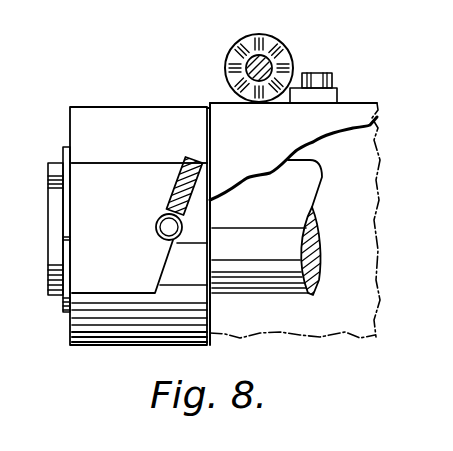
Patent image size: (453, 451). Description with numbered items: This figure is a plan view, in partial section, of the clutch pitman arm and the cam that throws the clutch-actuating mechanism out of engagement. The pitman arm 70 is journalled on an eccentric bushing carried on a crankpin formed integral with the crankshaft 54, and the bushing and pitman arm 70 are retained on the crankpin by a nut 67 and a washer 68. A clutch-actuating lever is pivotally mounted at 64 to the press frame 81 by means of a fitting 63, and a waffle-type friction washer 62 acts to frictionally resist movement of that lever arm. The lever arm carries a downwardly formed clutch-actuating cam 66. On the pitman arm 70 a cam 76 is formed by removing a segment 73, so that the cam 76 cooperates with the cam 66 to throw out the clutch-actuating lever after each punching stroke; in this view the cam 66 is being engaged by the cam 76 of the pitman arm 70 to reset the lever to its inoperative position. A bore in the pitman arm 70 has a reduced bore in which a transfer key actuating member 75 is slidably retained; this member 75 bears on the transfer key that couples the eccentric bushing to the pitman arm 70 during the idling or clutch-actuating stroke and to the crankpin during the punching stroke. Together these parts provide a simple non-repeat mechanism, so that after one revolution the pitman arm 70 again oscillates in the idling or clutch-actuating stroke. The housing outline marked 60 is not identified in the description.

The crankshaft 54 is at (306, 190).
The housing 60 is at (119, 114).
The waffle-type friction washer 62 is at (270, 18).
The fitting 63 is at (330, 98).
The pivot 64 is at (272, 62).
The clutch-actuating cam 66 is at (197, 152).
The nut 67 is at (50, 204).
The washer 68 is at (66, 250).
The pitman arm 70 is at (0, 21).
The segment 73 is at (110, 183).
The transfer key actuating member 75 is at (156, 228).
The cam 76 is at (165, 256).
The press frame 81 is at (224, 112).